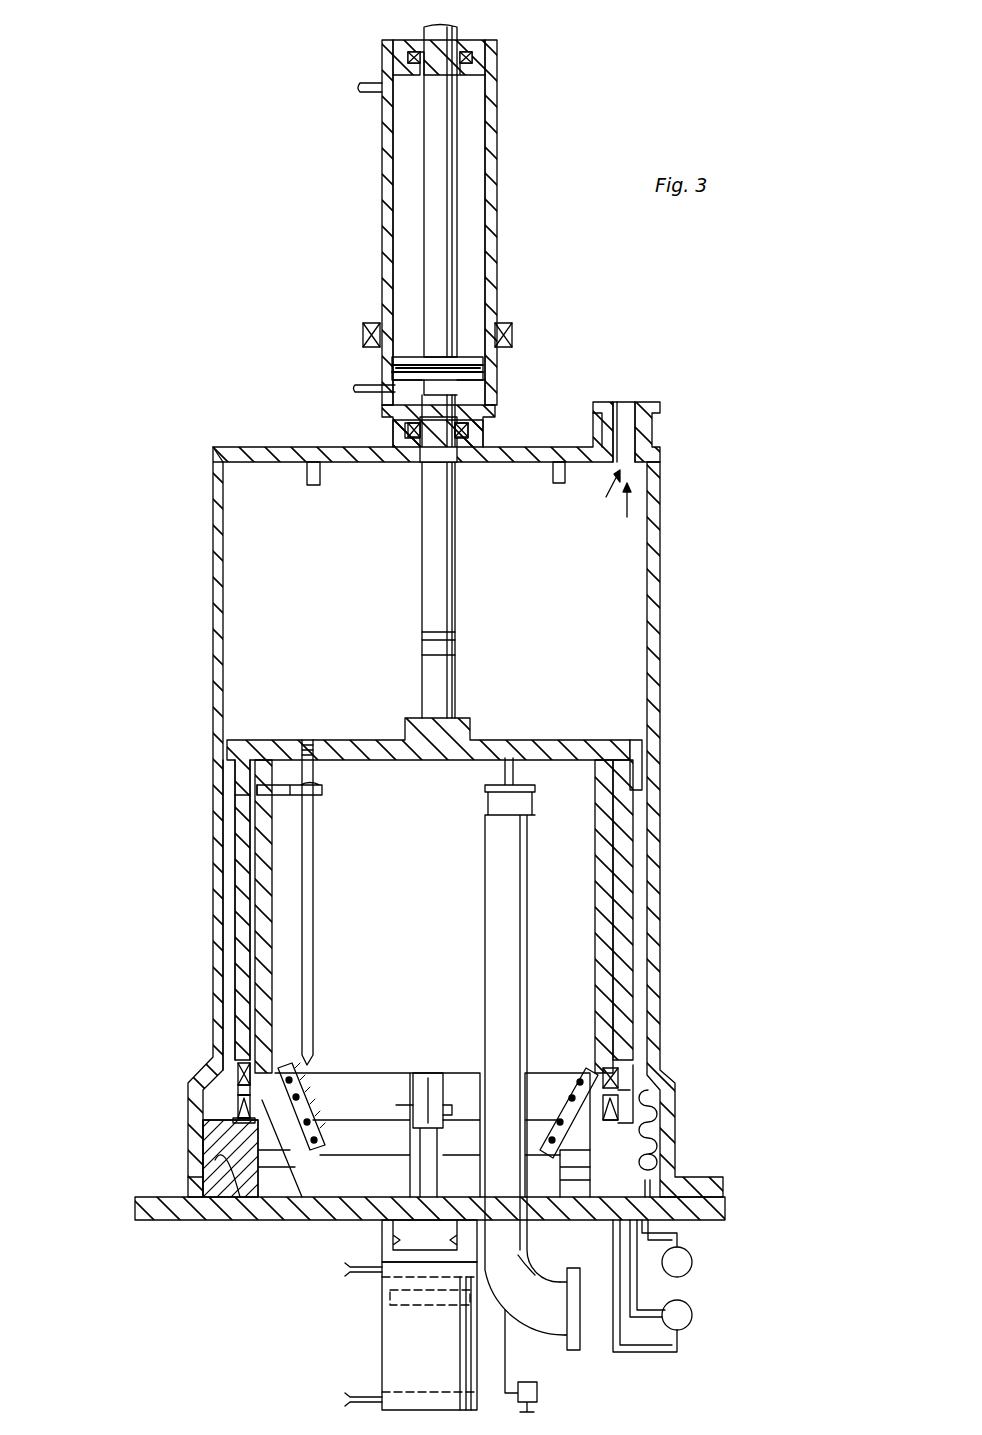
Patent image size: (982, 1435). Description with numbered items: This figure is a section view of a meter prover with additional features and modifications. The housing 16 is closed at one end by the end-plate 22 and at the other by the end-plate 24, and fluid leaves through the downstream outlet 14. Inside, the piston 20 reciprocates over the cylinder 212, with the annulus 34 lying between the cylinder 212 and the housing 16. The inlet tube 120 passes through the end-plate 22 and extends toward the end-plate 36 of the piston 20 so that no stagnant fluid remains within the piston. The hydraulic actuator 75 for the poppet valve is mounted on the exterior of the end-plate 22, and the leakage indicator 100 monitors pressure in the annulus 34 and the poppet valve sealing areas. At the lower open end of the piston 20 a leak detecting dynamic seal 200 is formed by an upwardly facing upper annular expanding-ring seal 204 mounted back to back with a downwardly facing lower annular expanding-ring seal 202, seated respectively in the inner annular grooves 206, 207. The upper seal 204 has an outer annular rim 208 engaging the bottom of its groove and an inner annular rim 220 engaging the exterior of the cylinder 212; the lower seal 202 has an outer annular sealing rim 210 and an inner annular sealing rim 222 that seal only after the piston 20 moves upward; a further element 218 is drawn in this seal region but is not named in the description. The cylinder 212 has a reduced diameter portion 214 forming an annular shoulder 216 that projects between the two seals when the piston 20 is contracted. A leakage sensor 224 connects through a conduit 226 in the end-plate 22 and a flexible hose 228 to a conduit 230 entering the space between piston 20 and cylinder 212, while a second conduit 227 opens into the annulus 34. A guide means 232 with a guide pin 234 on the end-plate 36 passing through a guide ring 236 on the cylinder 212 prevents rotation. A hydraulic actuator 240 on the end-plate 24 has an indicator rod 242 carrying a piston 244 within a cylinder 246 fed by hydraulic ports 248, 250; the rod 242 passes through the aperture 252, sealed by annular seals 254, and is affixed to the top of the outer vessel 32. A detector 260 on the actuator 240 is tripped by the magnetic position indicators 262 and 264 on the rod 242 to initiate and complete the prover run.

The downstream outlet 14 is at (623, 405).
The housing 16 is at (652, 585).
The piston 20 is at (258, 890).
The end-plate 22 is at (135, 1205).
The end-plate 24 is at (240, 447).
The outer vessel 32 is at (235, 940).
The annulus 34 is at (228, 968).
The end-plate 36 is at (340, 748).
The hydraulic actuator 75 is at (378, 1349).
The leakage indicator 100 is at (700, 1322).
The inlet tube 120 is at (485, 905).
The leak detecting dynamic seal 200 is at (582, 1072).
The lower annular expanding-ring seal 202 is at (240, 1105).
The upper annular expanding-ring seal 204 is at (240, 1087).
The inner annular groove 206 is at (240, 1065).
The inner annular groove 207 is at (240, 1122).
The outer annular rim 208 is at (240, 1075).
The outer annular sealing rim 210 is at (240, 1117).
The cylinder 212 is at (252, 915).
The reduced diameter portion 214 is at (228, 1200).
The annular shoulder 216 is at (312, 1060).
The spacer 218 is at (240, 1095).
The inner annular rim 220 is at (290, 1072).
The inner annular sealing rim 222 is at (270, 1160).
The leakage sensor 224 is at (694, 1262).
The conduit 226 is at (662, 1245).
The second conduit 227 is at (690, 1305).
The flexible hose 228 is at (660, 1135).
The conduit 230 is at (635, 1070).
The guide means 232 is at (312, 802).
The guide pin 234 is at (310, 870).
The guide ring 236 is at (322, 787).
The hydraulic actuator 240 is at (378, 181).
The indicator rod 242 is at (445, 200).
The piston 244 is at (470, 360).
The cylinder 246 is at (497, 150).
The hydraulic port 248 is at (363, 90).
The hydraulic port 250 is at (360, 388).
The aperture 252 is at (426, 470).
The annular seals 254 is at (470, 432).
The detector 260 is at (366, 332).
The magnetic position indicator 262 is at (472, 393).
The magnetic position indicator 264 is at (457, 648).